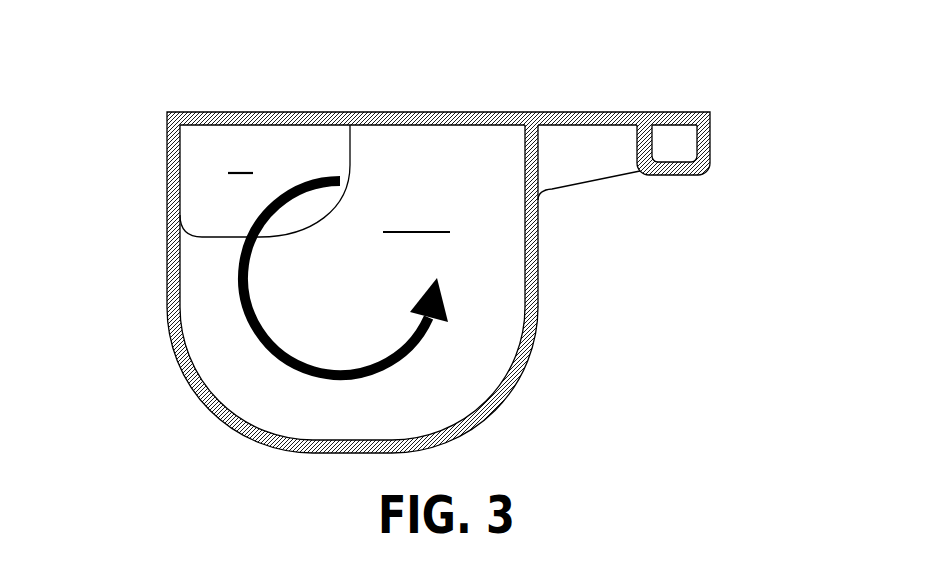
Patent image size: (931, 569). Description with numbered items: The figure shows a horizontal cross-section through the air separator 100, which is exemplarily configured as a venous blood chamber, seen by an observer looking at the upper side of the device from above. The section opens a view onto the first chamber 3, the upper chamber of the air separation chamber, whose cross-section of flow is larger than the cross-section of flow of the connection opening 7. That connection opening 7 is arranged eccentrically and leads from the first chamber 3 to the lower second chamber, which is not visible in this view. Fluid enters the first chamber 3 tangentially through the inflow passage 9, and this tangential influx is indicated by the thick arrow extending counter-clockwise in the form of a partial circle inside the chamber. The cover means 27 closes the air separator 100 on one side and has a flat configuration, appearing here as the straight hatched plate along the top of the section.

The first chamber 3 is at (280, 408).
The connection opening 7 is at (207, 176).
The inflow passage 9 is at (672, 138).
The cover means 27 is at (268, 117).
The air separator 100 is at (567, 298).